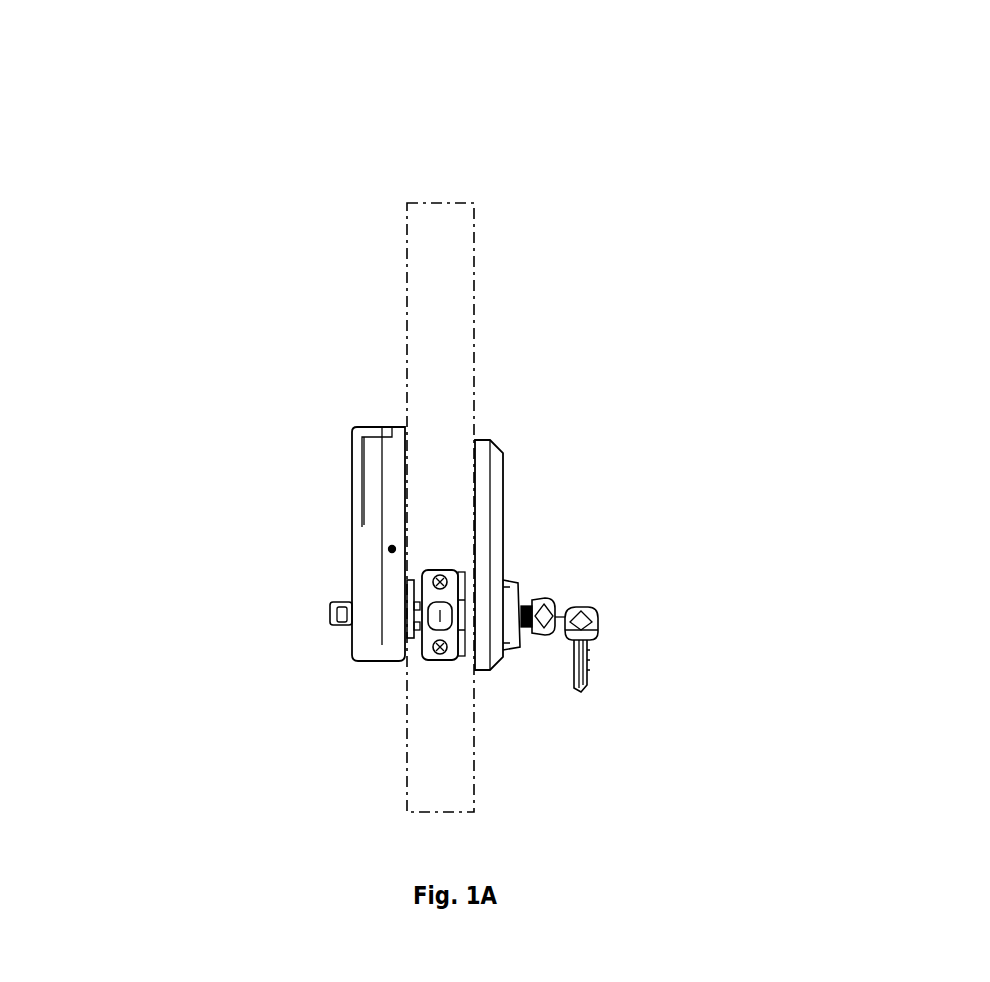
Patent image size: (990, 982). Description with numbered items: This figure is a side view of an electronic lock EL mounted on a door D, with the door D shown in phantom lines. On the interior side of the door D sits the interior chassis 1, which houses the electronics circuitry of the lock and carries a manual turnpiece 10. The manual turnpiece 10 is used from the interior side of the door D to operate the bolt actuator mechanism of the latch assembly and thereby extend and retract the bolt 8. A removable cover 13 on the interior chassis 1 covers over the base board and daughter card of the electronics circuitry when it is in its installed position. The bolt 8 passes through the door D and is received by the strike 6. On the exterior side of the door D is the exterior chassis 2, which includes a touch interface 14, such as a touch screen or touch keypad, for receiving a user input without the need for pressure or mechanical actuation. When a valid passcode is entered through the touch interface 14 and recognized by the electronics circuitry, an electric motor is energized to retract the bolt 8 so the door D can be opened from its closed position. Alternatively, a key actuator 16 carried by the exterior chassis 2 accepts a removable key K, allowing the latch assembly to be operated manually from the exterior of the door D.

The interior chassis 1 is at (305, 438).
The exterior chassis 2 is at (648, 505).
The strike 6 is at (435, 647).
The bolt 8 is at (438, 615).
The manual turnpiece 10 is at (332, 617).
The removable cover 13 is at (346, 468).
The touch interface 14 is at (550, 482).
The key actuator 16 is at (647, 582).
The door D is at (440, 203).
The electronic lock EL is at (683, 261).
The key K is at (598, 638).